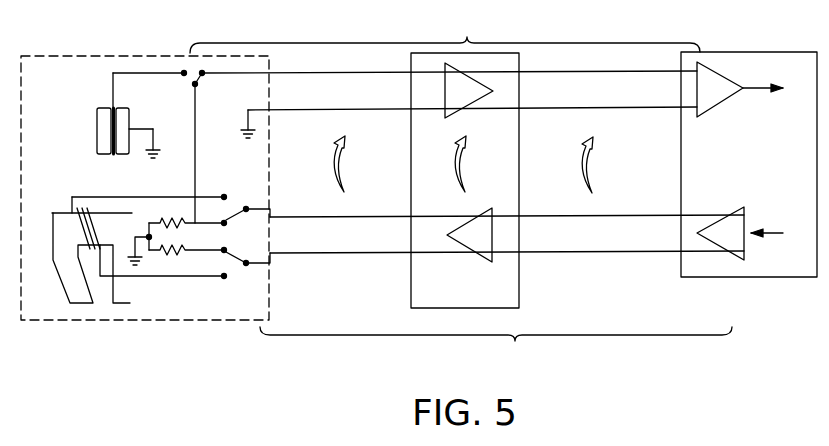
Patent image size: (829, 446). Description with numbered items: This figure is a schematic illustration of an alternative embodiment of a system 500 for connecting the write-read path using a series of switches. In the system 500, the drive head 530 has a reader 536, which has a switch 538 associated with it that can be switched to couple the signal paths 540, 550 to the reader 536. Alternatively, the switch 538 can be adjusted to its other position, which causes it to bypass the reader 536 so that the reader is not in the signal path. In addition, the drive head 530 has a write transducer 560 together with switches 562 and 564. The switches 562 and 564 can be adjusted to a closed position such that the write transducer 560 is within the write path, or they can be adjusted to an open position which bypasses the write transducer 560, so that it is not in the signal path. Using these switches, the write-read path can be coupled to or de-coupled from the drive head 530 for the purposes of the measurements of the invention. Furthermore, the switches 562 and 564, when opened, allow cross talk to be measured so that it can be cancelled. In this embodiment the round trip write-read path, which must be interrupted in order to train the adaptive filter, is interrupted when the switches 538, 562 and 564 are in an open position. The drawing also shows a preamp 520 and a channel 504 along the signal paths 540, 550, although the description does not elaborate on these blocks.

The system 500 is at (800, 367).
The channel 504 is at (759, 278).
The preamplifier 520 is at (520, 295).
The drive head 530 is at (185, 321).
The reader 536 is at (97, 129).
The switch 538 is at (197, 84).
The signal path 540 is at (496, 347).
The signal path 550 is at (445, 31).
The write transducer 560 is at (52, 213).
The switch 562 is at (246, 208).
The switch 564 is at (246, 265).